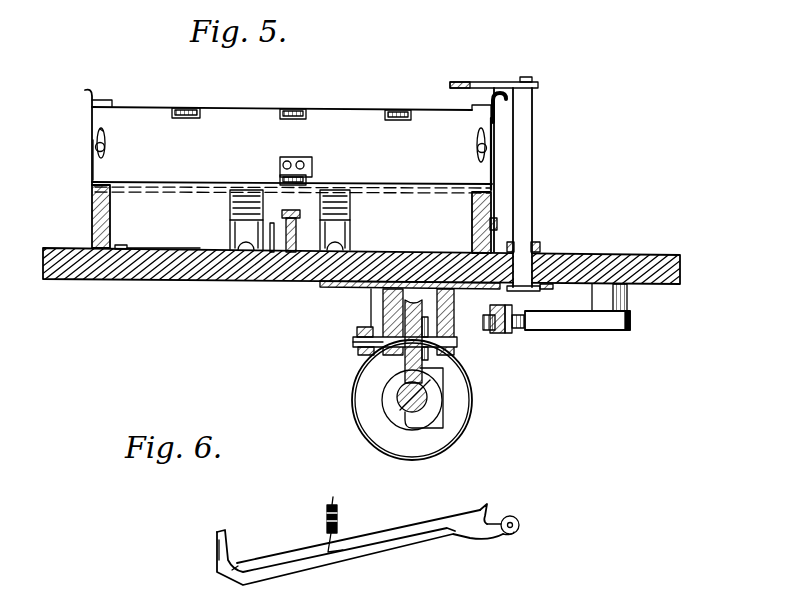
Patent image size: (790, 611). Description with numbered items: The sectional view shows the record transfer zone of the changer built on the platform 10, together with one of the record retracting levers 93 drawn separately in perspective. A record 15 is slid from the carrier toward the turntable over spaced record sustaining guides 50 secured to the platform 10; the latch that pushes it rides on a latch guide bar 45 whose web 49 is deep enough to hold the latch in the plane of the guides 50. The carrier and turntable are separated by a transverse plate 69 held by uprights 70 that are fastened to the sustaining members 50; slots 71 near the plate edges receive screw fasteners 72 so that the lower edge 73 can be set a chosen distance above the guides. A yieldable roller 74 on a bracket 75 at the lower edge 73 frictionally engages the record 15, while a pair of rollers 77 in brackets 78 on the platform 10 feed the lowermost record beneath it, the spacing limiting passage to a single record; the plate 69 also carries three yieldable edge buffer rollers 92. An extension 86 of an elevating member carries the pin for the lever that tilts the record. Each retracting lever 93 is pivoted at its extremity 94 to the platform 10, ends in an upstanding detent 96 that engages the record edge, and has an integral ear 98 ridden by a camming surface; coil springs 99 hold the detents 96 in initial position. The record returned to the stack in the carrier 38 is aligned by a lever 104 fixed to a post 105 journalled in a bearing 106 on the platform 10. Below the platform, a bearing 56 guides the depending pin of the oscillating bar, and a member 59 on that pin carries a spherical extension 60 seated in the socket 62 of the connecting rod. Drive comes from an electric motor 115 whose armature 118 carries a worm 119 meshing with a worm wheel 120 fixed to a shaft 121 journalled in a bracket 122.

In FIG. 5, the platform 10 is at (190, 280).
In FIG. 5, the record 15 is at (372, 186).
In FIG. 5, the magazine or carrier 38 is at (507, 103).
In FIG. 5, the latch guide bar 45 is at (294, 212).
In FIG. 5, the web 49 is at (300, 252).
In FIG. 5, the record sustaining guides 50 is at (92, 215).
In FIG. 5, the bearing 56 is at (628, 300).
In FIG. 5, the member 59 is at (572, 330).
In FIG. 5, the spherical extension 60 is at (522, 318).
In FIG. 5, the socket 62 is at (503, 333).
In FIG. 5, the transverse plate 69 is at (356, 130).
In FIG. 5, the uprights 70 is at (102, 100).
In FIG. 5, the slots 71 is at (477, 133).
In FIG. 5, the screw fasteners 72 is at (104, 147).
In FIG. 5, the lower edge 73 is at (292, 176).
In FIG. 5, the roller 74 is at (104, 130).
In FIG. 5, the bracket 75 is at (293, 158).
In FIG. 5, the rollers 77 is at (240, 205).
In FIG. 5, the brackets 78 is at (232, 232).
In FIG. 5, the extension 86 is at (497, 226).
In FIG. 5, the edge buffer rollers 92 is at (196, 108).
In FIG. 5, the levers 93 is at (186, 240).
In FIG. 6, the levers 93 is at (377, 542).
In FIG. 6, the extremities 94 is at (518, 528).
In FIG. 6, the detents 96 is at (227, 550).
In FIG. 6, the ears 98 is at (482, 506).
In FIG. 6, the coil springs 99 is at (338, 515).
In FIG. 5, the lever 104 is at (503, 84).
In FIG. 5, the post 105 is at (525, 170).
In FIG. 5, the bearing 106 is at (540, 247).
In FIG. 5, the electric motor 115 is at (452, 420).
In FIG. 5, the armature 118 is at (397, 398).
In FIG. 5, the worm 119 is at (398, 410).
In FIG. 5, the worm wheel 120 is at (440, 376).
In FIG. 5, the shaft 121 is at (362, 370).
In FIG. 5, the bracket 122 is at (455, 345).